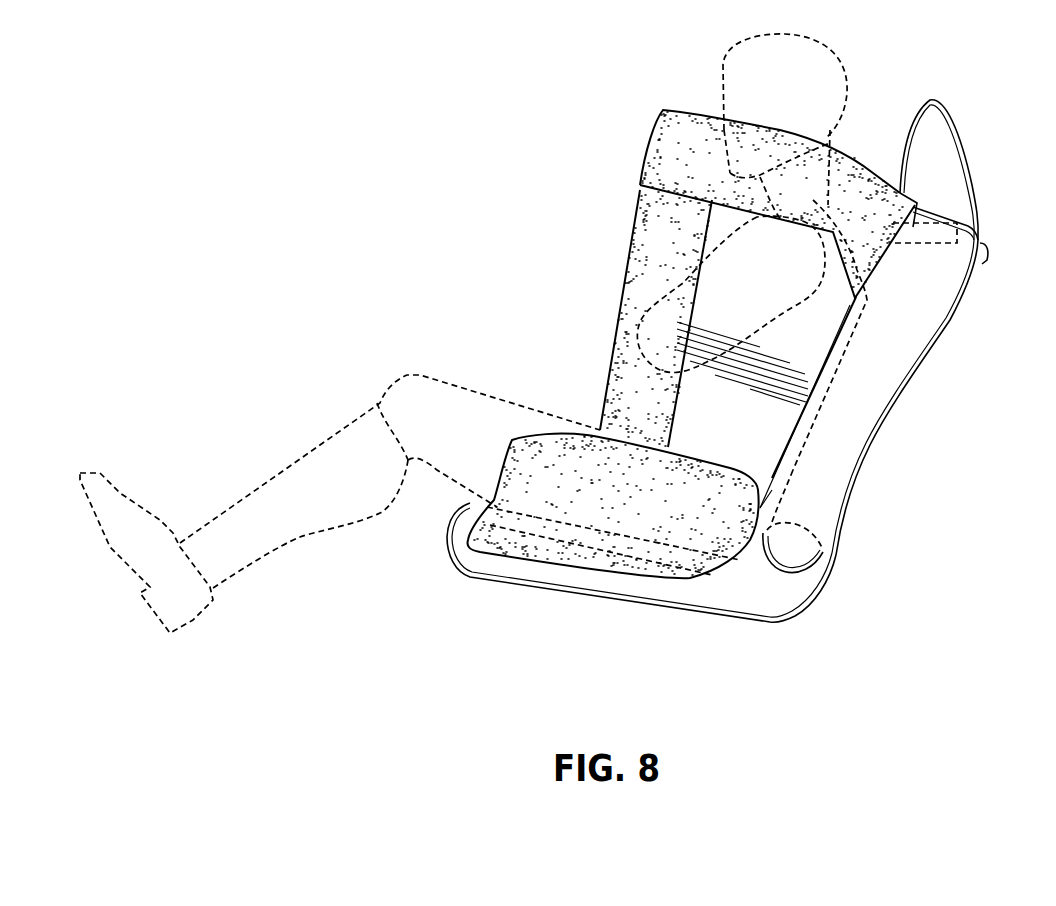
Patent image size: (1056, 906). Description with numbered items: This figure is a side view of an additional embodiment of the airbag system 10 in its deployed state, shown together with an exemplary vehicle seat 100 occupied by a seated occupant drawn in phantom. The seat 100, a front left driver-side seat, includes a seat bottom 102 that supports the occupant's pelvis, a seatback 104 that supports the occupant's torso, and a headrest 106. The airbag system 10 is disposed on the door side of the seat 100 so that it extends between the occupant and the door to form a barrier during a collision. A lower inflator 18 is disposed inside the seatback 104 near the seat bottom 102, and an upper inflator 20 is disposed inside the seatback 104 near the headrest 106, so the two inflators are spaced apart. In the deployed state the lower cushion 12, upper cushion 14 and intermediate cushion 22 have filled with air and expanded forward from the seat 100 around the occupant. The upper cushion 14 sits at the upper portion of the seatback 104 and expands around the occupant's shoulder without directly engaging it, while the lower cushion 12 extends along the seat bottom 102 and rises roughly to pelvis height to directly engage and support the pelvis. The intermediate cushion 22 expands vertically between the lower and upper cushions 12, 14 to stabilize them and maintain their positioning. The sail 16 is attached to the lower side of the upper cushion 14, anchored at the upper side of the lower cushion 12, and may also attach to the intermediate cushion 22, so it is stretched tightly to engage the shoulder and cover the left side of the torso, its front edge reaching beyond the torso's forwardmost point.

The airbag system 10 is at (626, 94).
The lower cushion 12 is at (467, 535).
The upper cushion 14 is at (677, 122).
The sail 16 is at (773, 433).
The lower inflator 18 is at (790, 487).
The upper inflator 20 is at (980, 255).
The intermediate cushion 22 is at (627, 260).
The vehicle seat 100 is at (724, 369).
The seat bottom 102 is at (753, 607).
The seatback 104 is at (883, 390).
The headrest 106 is at (937, 113).